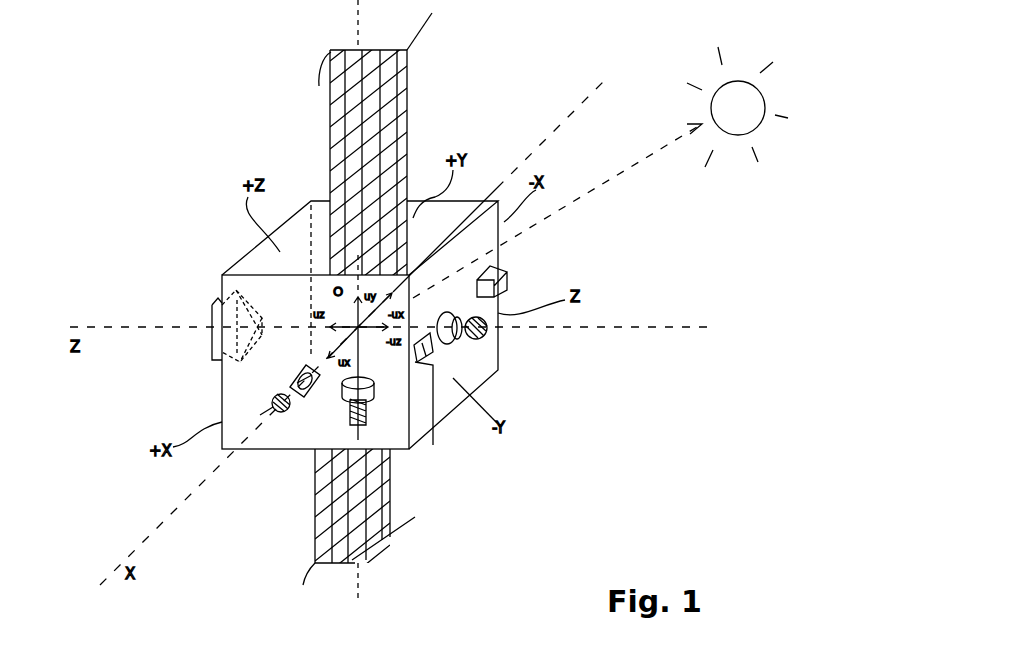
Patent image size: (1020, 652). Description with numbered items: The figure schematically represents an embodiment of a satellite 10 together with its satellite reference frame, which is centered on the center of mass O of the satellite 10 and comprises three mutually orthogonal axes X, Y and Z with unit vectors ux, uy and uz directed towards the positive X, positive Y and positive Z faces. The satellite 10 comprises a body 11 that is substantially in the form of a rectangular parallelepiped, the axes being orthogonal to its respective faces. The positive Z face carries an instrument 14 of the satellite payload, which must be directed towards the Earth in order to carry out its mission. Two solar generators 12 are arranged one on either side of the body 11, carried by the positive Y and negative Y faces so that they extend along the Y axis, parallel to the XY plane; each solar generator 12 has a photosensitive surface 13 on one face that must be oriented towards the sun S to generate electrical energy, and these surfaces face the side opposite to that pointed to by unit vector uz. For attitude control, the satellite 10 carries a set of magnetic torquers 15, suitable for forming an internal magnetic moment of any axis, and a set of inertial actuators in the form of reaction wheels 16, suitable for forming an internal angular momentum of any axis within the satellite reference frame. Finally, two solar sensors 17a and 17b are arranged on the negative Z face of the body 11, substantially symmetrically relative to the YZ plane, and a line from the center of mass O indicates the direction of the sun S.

The satellite 10 is at (234, 121).
The body 11 is at (312, 201).
The solar generator 12 is at (407, 100).
The photosensitive surface 13 is at (407, 55).
The instrument 14 is at (212, 320).
The magnetic torquer 15 is at (272, 402).
The reaction wheel 16 is at (290, 376).
The solar sensor 17a is at (500, 274).
The solar sensor 17b is at (433, 445).
The sun S is at (760, 82).